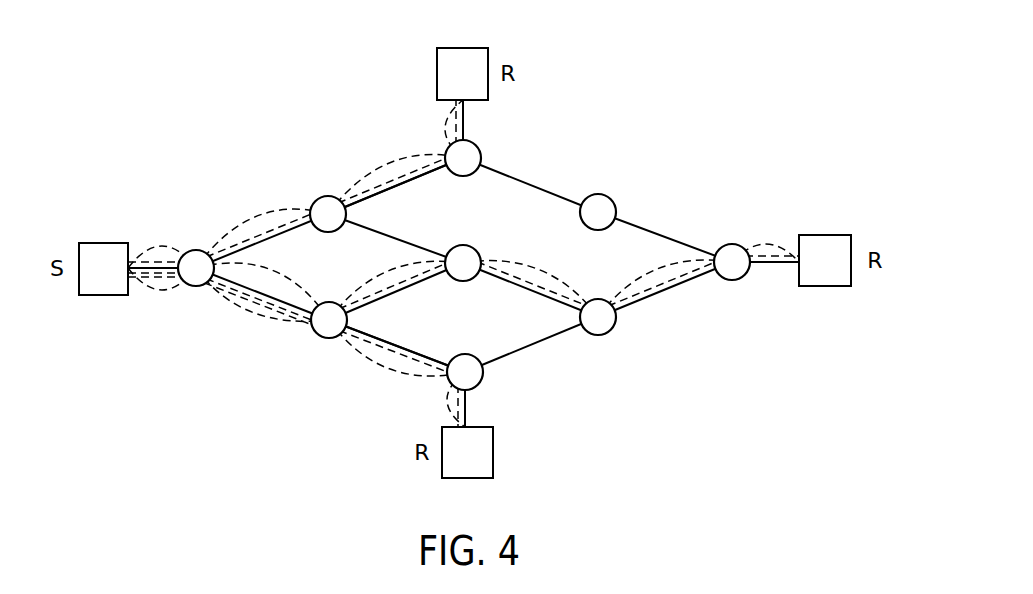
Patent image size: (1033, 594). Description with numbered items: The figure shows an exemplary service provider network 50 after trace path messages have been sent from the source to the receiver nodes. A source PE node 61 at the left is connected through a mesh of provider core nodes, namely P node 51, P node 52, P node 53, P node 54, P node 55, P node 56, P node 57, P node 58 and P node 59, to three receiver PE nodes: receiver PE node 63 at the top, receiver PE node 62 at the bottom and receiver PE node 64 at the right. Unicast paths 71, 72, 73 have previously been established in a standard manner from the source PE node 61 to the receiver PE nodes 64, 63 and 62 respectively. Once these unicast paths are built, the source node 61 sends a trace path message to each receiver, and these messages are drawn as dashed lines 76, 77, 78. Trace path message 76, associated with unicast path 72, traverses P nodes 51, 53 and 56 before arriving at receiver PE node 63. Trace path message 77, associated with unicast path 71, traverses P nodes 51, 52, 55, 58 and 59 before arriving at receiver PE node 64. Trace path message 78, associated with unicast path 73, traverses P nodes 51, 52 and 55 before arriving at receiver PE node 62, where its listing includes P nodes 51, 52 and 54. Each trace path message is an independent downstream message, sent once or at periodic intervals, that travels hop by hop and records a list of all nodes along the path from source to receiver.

The service provider network 50 is at (682, 103).
The P node 51 is at (198, 286).
The P node 52 is at (317, 331).
The P node 53 is at (333, 198).
The P node 54 is at (483, 382).
The P node 55 is at (463, 281).
The P node 56 is at (481, 150).
The P node 57 is at (600, 194).
The P node 58 is at (604, 334).
The P node 59 is at (734, 280).
The source PE node 61 is at (101, 243).
The receiver PE node 62 is at (493, 447).
The receiver PE node 63 is at (437, 68).
The receiver PE node 64 is at (824, 235).
The unicast path 71 is at (776, 257).
The unicast path 72 is at (392, 175).
The unicast path 73 is at (402, 358).
The trace path message 76 is at (257, 208).
The trace path message 77 is at (275, 271).
The trace path message 78 is at (381, 372).